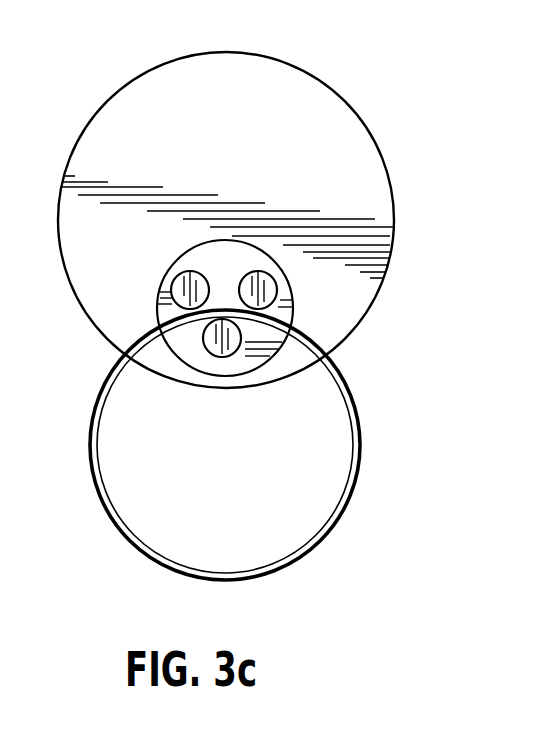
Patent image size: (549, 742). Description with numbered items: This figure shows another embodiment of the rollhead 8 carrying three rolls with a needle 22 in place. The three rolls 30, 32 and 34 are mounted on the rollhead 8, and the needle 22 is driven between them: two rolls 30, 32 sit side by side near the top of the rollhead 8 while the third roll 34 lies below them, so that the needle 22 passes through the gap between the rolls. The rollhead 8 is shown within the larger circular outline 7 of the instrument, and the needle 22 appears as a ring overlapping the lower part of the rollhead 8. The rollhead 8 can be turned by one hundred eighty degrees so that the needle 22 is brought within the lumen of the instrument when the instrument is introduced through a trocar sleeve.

The optical fiber cladding 7 is at (345, 127).
The rollhead 8 is at (249, 252).
The needle 22 is at (362, 450).
The roll 30 is at (178, 285).
The roll 32 is at (278, 287).
The roll 34 is at (218, 350).